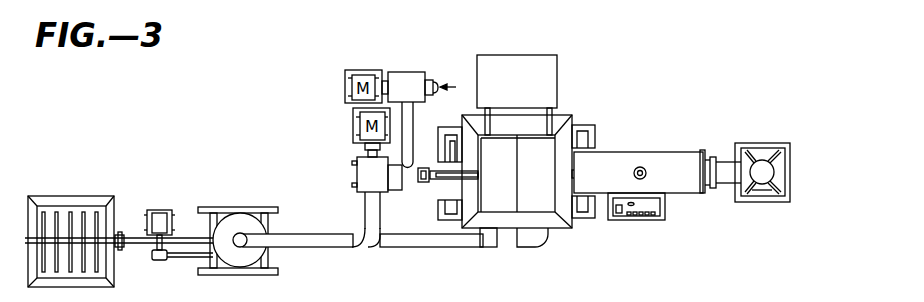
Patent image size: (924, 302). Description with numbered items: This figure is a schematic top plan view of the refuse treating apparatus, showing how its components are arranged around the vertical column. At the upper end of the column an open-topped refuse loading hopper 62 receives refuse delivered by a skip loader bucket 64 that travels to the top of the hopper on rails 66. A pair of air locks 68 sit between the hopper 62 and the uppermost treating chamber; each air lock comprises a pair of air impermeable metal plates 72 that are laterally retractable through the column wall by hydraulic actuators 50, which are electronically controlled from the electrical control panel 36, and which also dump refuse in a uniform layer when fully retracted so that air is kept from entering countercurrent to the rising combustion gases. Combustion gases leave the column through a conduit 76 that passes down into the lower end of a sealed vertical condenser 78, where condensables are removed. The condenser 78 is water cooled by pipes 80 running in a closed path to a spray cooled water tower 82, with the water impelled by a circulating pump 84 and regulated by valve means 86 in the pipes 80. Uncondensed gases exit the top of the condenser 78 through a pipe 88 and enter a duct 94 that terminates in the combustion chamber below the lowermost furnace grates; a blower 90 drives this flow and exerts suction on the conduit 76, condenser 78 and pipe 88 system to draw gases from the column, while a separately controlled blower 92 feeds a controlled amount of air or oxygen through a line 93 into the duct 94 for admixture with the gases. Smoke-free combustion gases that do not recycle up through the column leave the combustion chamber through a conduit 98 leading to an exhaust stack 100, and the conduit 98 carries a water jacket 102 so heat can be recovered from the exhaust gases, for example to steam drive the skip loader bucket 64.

The electrical control panel 36 is at (608, 218).
The hydraulic actuators 50 is at (440, 170).
The refuse loading hopper 62 is at (466, 144).
The skip loader bucket 64 is at (538, 61).
The rails 66 is at (553, 122).
The air locks 68 is at (575, 154).
The metal plates 72 is at (502, 203).
The conduit 76 is at (382, 237).
The condenser 78 is at (240, 213).
The pipes 80 is at (134, 244).
The water tower 82 is at (63, 218).
The circulating pump 84 is at (157, 212).
The valve means 86 is at (120, 252).
The pipe 88 is at (298, 258).
The blower 90 is at (358, 172).
The blower 92 is at (411, 49).
The line 93 is at (407, 130).
The duct 94 is at (400, 182).
The conduit 98 is at (720, 186).
The exhaust stack 100 is at (766, 170).
The water jacket 102 is at (694, 158).